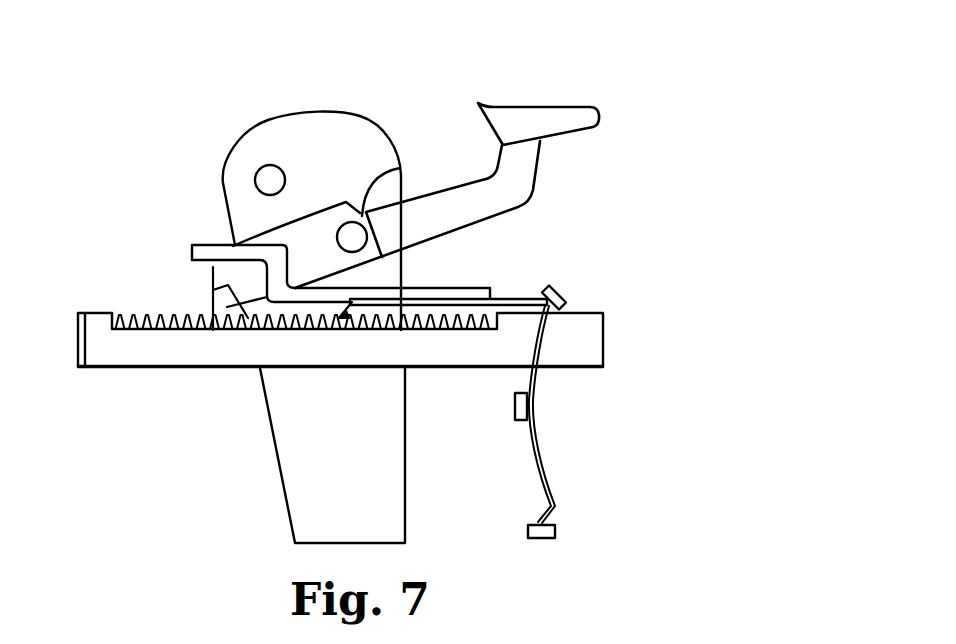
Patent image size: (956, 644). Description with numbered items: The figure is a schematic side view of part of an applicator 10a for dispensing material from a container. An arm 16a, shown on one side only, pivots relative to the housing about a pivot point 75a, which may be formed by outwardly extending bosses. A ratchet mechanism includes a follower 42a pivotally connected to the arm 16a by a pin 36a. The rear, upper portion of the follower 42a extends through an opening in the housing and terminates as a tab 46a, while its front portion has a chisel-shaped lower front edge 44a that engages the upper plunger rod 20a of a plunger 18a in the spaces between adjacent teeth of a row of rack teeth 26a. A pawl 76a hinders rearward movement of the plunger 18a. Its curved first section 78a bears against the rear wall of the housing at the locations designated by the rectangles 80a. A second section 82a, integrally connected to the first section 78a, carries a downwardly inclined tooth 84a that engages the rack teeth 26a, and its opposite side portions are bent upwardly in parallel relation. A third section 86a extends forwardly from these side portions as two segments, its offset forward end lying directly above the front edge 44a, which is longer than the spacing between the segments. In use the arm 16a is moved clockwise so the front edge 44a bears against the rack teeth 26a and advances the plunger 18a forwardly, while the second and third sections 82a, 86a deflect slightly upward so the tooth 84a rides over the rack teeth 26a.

The applicator 10a is at (444, 83).
The arm 16a is at (363, 115).
The plunger 18a is at (159, 378).
The upper plunger rod 20a is at (142, 370).
The rack teeth 26a is at (163, 313).
The pin 36a is at (401, 167).
The follower 42a is at (487, 223).
The front edge 44a is at (213, 335).
The tab 46a is at (553, 107).
The pivot point 75a is at (255, 178).
The pawl 76a is at (466, 293).
The first section 78a is at (545, 477).
The rectangles 80a is at (567, 295).
The second section 82a is at (412, 290).
The tooth 84a is at (350, 320).
The third section 86a is at (192, 252).